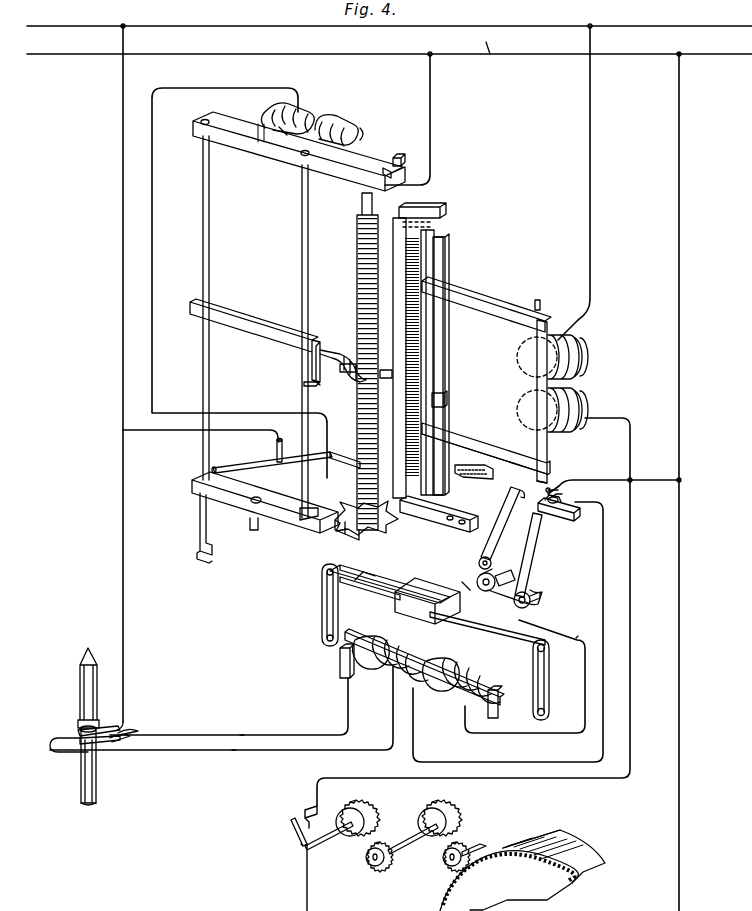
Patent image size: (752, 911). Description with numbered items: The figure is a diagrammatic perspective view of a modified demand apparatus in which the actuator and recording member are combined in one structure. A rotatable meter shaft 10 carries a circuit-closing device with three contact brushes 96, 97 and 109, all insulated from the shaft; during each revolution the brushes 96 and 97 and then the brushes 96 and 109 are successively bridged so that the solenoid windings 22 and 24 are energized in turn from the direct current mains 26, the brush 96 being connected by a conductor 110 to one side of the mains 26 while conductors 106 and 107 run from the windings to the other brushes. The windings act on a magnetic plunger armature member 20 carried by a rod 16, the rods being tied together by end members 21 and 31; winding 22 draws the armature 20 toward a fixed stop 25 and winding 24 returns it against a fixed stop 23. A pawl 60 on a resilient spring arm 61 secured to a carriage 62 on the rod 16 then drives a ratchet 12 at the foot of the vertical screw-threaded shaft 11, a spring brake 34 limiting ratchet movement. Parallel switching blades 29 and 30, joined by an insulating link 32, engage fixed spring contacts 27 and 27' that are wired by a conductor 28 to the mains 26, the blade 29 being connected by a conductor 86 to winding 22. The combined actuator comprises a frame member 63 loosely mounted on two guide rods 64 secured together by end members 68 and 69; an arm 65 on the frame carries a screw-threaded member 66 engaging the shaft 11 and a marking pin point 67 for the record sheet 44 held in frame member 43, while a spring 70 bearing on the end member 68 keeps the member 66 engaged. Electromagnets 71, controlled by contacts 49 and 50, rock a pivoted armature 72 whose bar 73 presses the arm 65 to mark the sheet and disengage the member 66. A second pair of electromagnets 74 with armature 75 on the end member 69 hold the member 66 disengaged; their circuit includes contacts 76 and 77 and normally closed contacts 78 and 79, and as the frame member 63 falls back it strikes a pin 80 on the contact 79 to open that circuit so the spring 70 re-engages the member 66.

The meter shaft 10 is at (81, 783).
The screw-threaded shaft 11 is at (357, 231).
The ratchet 12 is at (340, 518).
The rod 16 is at (494, 636).
The magnetic plunger armature member 20 is at (416, 653).
The end member 21 is at (549, 688).
The solenoid winding 22 is at (380, 666).
The fixed stop 23 is at (498, 720).
The solenoid winding 24 is at (446, 700).
The fixed stop 25 is at (340, 680).
The direct current mains 26 is at (515, 54).
The fixed spring contact 27 is at (571, 514).
The fixed spring contact 27' is at (471, 488).
The conductor 28 is at (600, 480).
The switching blade 29 is at (540, 560).
The switching blade 30 is at (504, 518).
The end member 31 is at (322, 602).
The link 32 is at (502, 582).
The spring brake 34 is at (424, 530).
The frame member 43 is at (447, 264).
The record sheet 44 is at (440, 212).
The contact 49 is at (306, 812).
The contact 50 is at (296, 822).
The pawl 60 is at (390, 572).
The resilient spring arm 61 is at (418, 566).
The carriage 62 is at (427, 601).
The frame member 63 is at (266, 318).
The guide rods 64 is at (210, 262).
The arm 65 is at (332, 340).
The screw-threaded member 66 is at (380, 392).
The marking pin point 67 is at (405, 385).
The end member 68 is at (286, 528).
The end member 69 is at (237, 150).
The spring 70 is at (200, 518).
The electromagnets 71 is at (582, 352).
The armature 72 is at (530, 394).
The bar 73 is at (430, 341).
The electromagnets 74 is at (343, 118).
The armature 75 is at (284, 140).
The contact 76 is at (398, 156).
The contact 77 is at (362, 175).
The contact 78 is at (280, 452).
The contact 79 is at (252, 458).
The pin 80 is at (229, 463).
The conductor 86 is at (578, 636).
The contact brush 96 is at (110, 726).
The contact brush 97 is at (125, 732).
The conductor 106 is at (242, 735).
The conductor 107 is at (234, 750).
The contact brush 109 is at (70, 738).
The conductor 110 is at (123, 289).